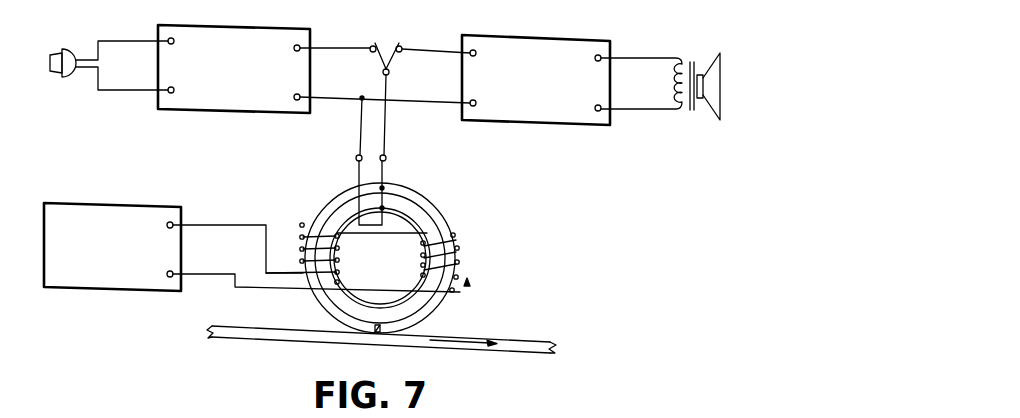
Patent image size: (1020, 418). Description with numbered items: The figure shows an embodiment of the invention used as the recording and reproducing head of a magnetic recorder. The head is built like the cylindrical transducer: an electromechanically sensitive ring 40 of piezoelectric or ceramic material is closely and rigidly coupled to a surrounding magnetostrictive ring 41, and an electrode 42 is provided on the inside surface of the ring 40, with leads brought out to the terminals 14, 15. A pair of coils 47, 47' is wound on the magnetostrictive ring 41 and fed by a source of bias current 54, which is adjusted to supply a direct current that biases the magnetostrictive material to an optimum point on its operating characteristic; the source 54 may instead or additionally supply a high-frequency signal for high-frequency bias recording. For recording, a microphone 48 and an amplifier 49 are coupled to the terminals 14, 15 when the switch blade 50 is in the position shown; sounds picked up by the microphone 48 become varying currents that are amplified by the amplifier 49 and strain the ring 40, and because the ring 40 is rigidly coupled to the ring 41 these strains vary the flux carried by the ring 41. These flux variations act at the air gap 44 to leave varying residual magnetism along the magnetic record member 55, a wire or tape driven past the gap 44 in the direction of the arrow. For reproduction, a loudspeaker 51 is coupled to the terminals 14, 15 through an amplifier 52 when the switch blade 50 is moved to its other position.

The microphone 48 is at (67, 74).
The amplifier 49 is at (235, 113).
The switch blade 50 is at (379, 59).
The amplifier 52 is at (545, 124).
The loudspeaker 51 is at (694, 108).
The terminal 15 is at (356, 158).
The terminal 14 is at (386, 158).
The electrode 42 is at (347, 219).
The magnetostrictive cylinder 41 is at (433, 215).
The electromechanically sensitive cylinder 40 is at (330, 285).
The coil 47 is at (346, 241).
The coil 47' is at (459, 262).
The bias current source 54 is at (125, 291).
The magnetic record member 55 is at (261, 333).
The air gap 44 is at (380, 333).